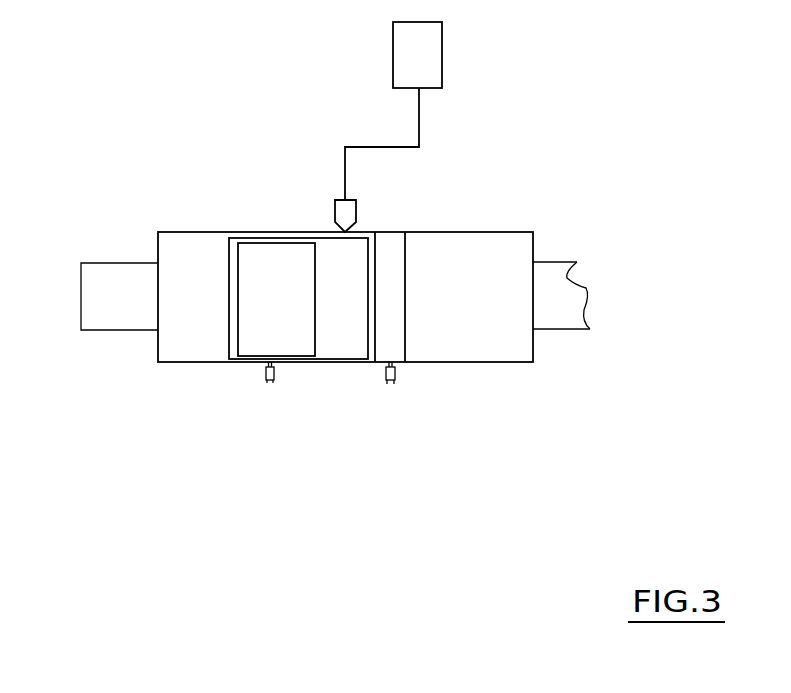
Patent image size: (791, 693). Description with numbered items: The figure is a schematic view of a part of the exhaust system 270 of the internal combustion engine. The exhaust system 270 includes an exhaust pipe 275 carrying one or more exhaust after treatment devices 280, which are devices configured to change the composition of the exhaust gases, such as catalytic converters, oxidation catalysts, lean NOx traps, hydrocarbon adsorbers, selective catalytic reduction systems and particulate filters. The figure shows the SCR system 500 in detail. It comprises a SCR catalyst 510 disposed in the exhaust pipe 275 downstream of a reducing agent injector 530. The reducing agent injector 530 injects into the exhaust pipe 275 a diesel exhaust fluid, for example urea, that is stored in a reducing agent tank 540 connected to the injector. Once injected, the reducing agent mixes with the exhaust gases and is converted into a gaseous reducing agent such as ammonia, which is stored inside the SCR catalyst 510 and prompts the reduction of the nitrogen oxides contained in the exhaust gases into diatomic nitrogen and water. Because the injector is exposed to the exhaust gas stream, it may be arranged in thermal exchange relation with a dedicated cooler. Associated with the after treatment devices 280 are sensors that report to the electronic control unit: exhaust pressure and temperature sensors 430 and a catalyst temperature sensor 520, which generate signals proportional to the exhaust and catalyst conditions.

The exhaust system 270 is at (232, 138).
The exhaust pipe 275 is at (117, 292).
The exhaust after treatment device 280 is at (190, 348).
The exhaust pressure and temperature sensor 430 is at (395, 383).
The SCR system 500 is at (303, 232).
The SCR catalyst 510 is at (291, 335).
The catalyst temperature sensor 520 is at (267, 382).
The reducing agent injector 530 is at (348, 208).
The reducing agent tank 540 is at (427, 53).